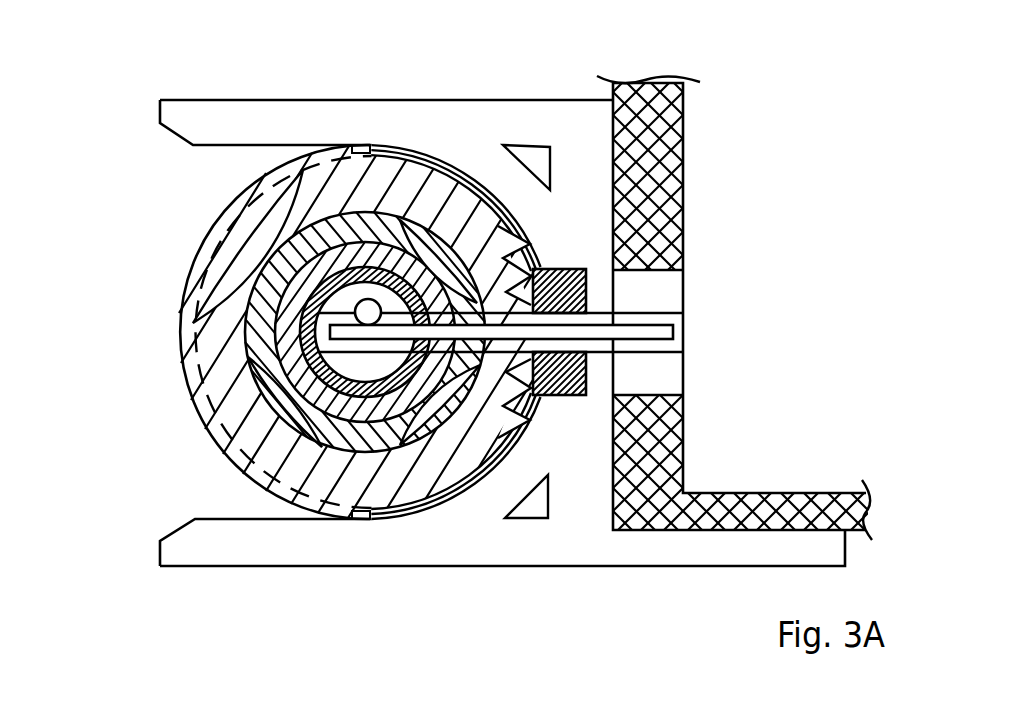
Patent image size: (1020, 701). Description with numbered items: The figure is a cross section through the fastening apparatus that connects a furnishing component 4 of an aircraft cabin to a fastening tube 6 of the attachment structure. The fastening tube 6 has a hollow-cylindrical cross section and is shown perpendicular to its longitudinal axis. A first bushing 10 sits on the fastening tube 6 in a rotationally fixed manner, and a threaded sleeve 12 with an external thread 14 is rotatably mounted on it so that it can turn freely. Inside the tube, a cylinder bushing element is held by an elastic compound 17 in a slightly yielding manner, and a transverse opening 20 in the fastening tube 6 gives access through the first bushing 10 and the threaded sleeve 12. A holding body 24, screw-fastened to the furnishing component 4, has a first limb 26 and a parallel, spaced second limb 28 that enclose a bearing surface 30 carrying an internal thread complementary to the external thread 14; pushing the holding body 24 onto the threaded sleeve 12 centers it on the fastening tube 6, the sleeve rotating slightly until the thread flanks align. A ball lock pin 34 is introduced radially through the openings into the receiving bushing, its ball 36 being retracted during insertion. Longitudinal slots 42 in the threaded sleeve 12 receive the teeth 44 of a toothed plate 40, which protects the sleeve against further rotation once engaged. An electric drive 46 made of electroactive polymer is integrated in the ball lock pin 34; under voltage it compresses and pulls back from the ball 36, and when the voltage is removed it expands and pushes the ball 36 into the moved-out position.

The furnishing component 4 is at (655, 163).
The fastening tube 6 is at (247, 353).
The first bushing 10 is at (293, 250).
The threaded sleeve 12 is at (395, 193).
The external thread 14 is at (347, 160).
The elastic compound 17 is at (295, 353).
The transverse opening 20 is at (483, 465).
The holding body 24 is at (610, 553).
The first limb 26 is at (434, 590).
The second limb 28 is at (248, 92).
The bearing surface 30 is at (492, 480).
The ball lock pin 34 is at (392, 345).
The ball 36 is at (365, 312).
The toothed plate 40 is at (587, 288).
The longitudinal slots 42 is at (480, 245).
The teeth 44 is at (523, 430).
The electric drive 46 is at (600, 330).